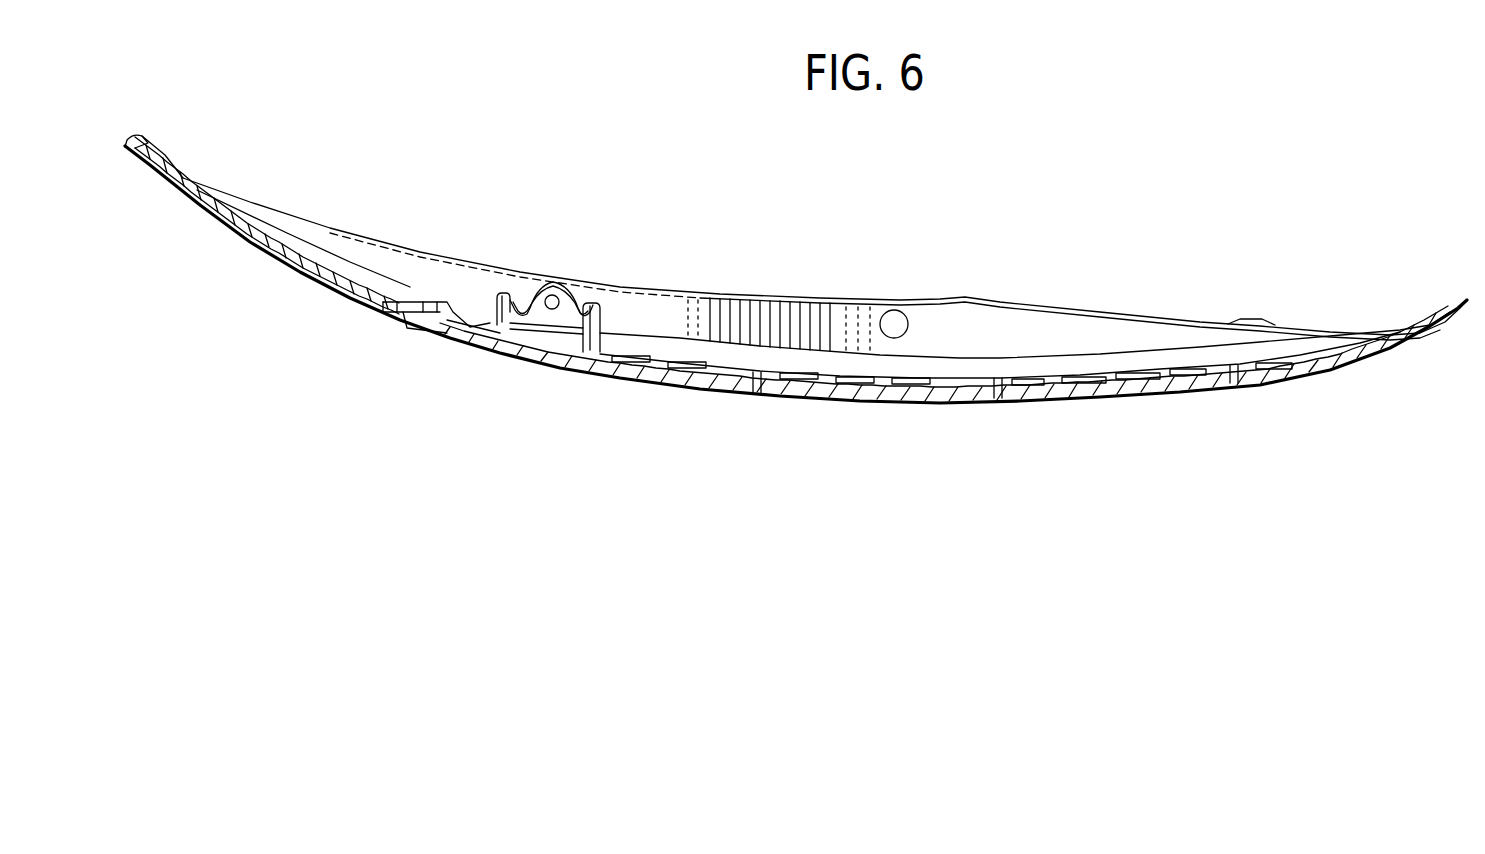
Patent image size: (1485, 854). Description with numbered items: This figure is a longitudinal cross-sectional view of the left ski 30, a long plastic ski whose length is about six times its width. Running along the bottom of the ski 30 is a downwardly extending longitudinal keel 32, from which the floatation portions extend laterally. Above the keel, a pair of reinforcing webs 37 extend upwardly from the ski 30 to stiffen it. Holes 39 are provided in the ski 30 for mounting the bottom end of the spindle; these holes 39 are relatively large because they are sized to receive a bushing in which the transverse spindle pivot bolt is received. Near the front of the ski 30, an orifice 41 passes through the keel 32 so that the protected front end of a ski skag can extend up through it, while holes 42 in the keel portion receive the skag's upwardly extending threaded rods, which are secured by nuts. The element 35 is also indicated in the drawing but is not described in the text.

The left ski 30 is at (414, 343).
The longitudinal keel 32 is at (800, 398).
The clip 35 is at (537, 363).
The reinforcing webs 37 is at (1028, 333).
The holes 39 is at (908, 324).
The orifice 41 is at (410, 300).
The holes 42 is at (757, 388).